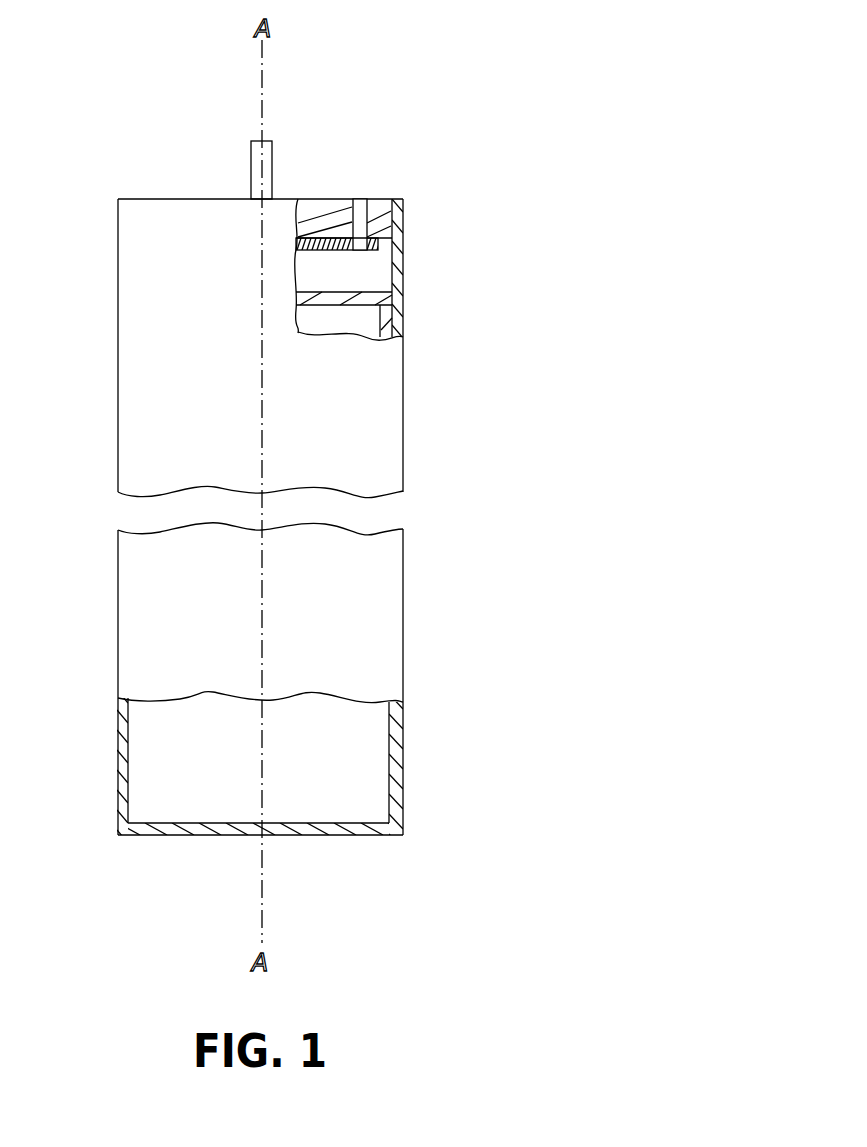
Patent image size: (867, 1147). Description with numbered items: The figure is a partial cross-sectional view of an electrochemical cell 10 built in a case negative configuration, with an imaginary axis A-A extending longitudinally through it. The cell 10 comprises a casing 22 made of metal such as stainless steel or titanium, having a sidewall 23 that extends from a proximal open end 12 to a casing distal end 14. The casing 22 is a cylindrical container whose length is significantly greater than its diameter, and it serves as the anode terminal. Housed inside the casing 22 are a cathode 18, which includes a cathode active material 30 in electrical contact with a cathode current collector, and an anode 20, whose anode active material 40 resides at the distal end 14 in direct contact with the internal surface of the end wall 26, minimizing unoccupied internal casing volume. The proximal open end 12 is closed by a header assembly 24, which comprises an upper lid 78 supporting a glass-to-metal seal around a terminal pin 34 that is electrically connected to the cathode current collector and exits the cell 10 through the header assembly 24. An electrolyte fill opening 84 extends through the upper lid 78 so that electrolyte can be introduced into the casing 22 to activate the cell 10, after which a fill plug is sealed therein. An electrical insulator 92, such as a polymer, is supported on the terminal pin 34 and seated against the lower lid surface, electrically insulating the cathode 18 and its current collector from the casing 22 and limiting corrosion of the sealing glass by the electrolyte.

The electrochemical cell 10 is at (433, 88).
The proximal open end 12 is at (395, 198).
The casing distal end 14 is at (402, 785).
The cathode 18 is at (435, 215).
The anode 20 is at (340, 760).
The casing 22 is at (402, 327).
The sidewall 23 is at (402, 298).
The header assembly 24 is at (342, 200).
The end wall 26 is at (187, 837).
The cathode active material 30 is at (367, 328).
The terminal pin 34 is at (257, 150).
The anode active material 40 is at (140, 770).
The upper lid 78 is at (330, 200).
The electrolyte fill opening 84 is at (360, 199).
The electrical insulator 92 is at (341, 252).